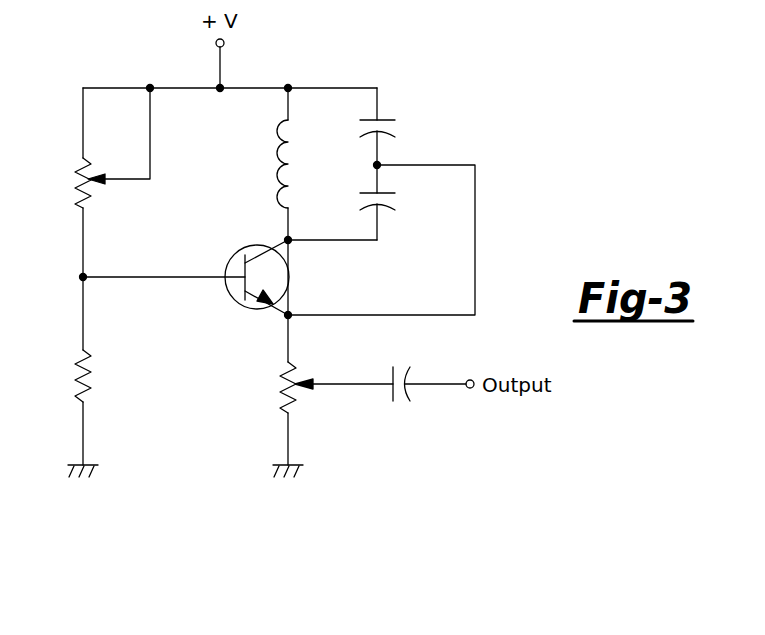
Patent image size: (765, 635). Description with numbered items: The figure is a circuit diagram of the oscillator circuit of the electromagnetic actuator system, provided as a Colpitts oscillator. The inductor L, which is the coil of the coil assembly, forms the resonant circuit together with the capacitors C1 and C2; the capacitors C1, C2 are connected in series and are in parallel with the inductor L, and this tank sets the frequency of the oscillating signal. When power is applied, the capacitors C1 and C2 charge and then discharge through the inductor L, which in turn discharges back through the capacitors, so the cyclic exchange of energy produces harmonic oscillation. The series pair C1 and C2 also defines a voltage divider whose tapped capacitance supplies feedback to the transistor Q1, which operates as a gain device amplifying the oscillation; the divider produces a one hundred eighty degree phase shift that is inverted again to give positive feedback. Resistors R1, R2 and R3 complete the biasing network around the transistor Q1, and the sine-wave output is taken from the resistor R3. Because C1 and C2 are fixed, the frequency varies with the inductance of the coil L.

The resistor R1 is at (87, 148).
The resistor R2 is at (58, 376).
The resistor R3 is at (311, 387).
The inductor L is at (295, 164).
The capacitor C1 is at (397, 140).
The capacitor C2 is at (397, 202).
The transistor Q1 is at (276, 277).